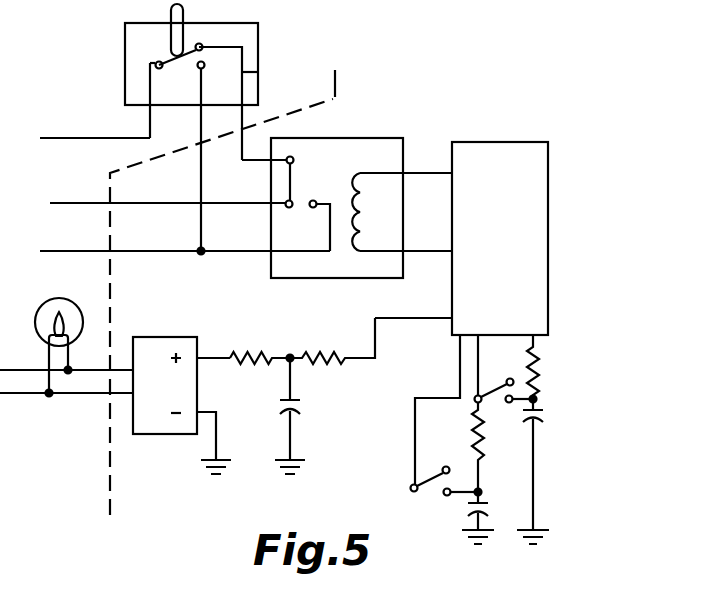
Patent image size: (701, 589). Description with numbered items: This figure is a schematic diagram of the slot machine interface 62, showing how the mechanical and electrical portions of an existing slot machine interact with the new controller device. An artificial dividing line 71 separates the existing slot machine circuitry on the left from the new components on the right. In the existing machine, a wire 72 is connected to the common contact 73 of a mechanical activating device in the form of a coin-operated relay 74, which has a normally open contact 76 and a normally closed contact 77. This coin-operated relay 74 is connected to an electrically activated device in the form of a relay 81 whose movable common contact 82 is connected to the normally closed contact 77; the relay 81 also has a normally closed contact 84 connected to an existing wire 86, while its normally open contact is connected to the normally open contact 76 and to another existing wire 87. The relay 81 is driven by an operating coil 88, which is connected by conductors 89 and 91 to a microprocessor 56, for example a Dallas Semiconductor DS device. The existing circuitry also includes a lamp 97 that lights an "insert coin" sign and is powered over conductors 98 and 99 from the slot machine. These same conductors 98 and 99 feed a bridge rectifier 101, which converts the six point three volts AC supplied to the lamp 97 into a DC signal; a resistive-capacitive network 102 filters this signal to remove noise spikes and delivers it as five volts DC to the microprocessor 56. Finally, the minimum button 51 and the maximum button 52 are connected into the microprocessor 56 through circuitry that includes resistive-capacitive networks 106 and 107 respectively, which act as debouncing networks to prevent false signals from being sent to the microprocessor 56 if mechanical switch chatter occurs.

The minimum button 51 is at (432, 478).
The maximum button 52 is at (492, 388).
The microprocessor 56 is at (517, 259).
The slot machine interface 62 is at (375, 118).
The artificial dividing line 71 is at (333, 99).
The wire 72 is at (96, 138).
The common contact 73 is at (176, 60).
The coin-operated relay 74 is at (258, 36).
The normally open contact 76 is at (201, 88).
The normally closed contact 77 is at (258, 72).
The relay 81 is at (398, 122).
The movable common contact 82 is at (290, 177).
The normally closed contact 84 is at (328, 236).
The existing wire 86 is at (142, 251).
The existing wire 87 is at (146, 203).
The operating coil 88 is at (364, 204).
The conductor 89 is at (428, 170).
The conductor 91 is at (440, 251).
The lamp 97 is at (40, 300).
The conductor 98 is at (32, 348).
The conductor 99 is at (13, 398).
The bridge rectifier 101 is at (190, 336).
The resistive-capacitive network 102 is at (292, 340).
The resistive-capacitive network 106 is at (484, 441).
The resistive-capacitive network 107 is at (531, 362).